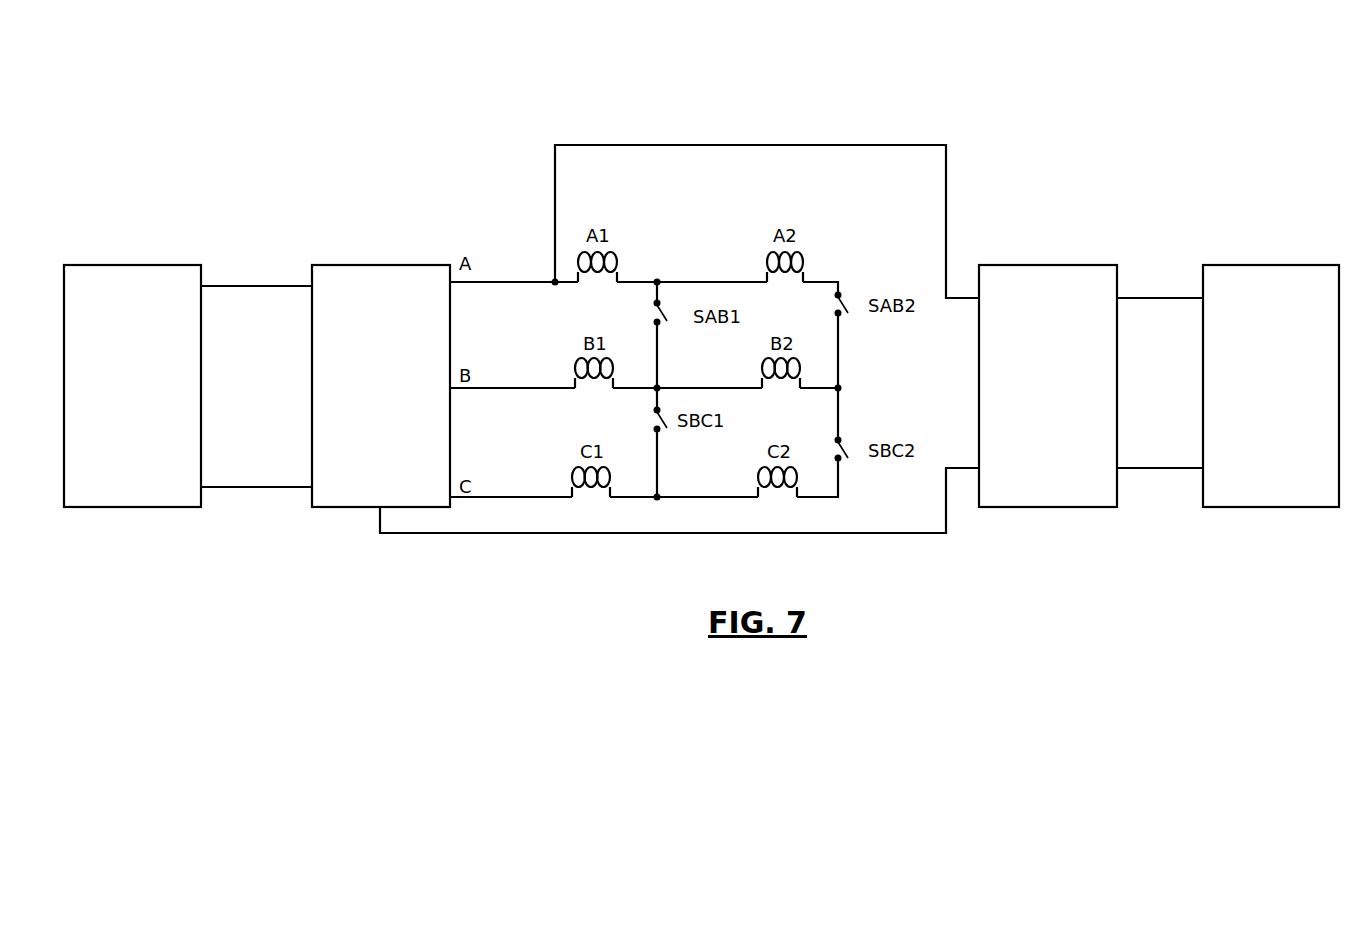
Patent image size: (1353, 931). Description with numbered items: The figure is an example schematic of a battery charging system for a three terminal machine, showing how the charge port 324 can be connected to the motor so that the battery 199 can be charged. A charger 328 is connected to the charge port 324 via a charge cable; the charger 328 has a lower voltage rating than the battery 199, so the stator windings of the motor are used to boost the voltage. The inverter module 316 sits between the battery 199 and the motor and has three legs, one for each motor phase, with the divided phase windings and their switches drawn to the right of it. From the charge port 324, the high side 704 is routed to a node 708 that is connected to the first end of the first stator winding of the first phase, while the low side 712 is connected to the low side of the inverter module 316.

The battery 199 is at (133, 507).
The inverter module 316 is at (352, 507).
The charge port 324 is at (1048, 507).
The charger 328 is at (1271, 507).
The high side 704 is at (784, 145).
The node 708 is at (557, 280).
The low side 712 is at (663, 533).